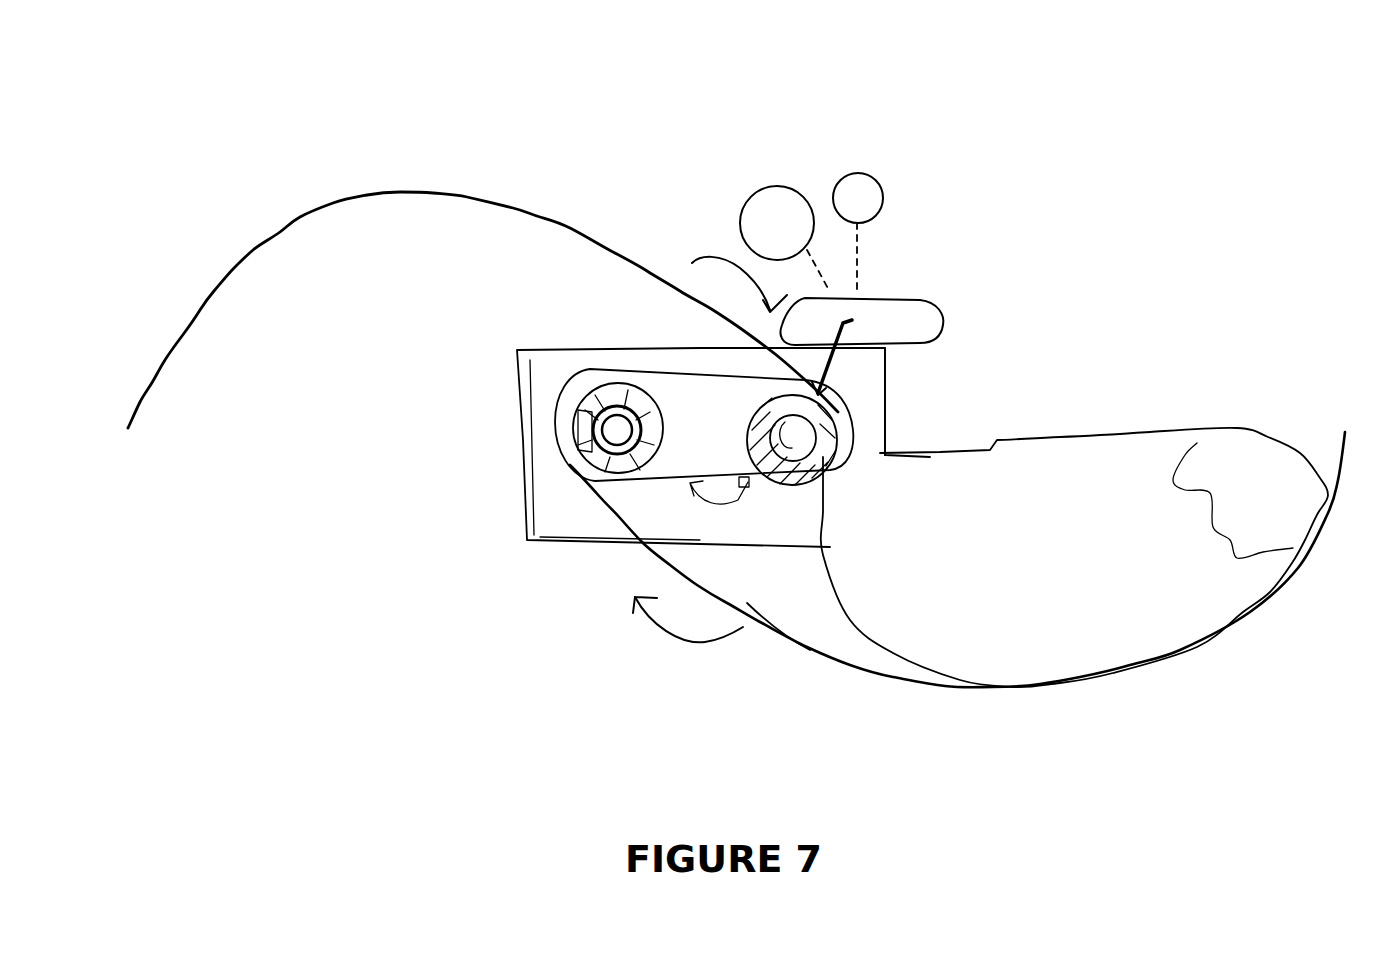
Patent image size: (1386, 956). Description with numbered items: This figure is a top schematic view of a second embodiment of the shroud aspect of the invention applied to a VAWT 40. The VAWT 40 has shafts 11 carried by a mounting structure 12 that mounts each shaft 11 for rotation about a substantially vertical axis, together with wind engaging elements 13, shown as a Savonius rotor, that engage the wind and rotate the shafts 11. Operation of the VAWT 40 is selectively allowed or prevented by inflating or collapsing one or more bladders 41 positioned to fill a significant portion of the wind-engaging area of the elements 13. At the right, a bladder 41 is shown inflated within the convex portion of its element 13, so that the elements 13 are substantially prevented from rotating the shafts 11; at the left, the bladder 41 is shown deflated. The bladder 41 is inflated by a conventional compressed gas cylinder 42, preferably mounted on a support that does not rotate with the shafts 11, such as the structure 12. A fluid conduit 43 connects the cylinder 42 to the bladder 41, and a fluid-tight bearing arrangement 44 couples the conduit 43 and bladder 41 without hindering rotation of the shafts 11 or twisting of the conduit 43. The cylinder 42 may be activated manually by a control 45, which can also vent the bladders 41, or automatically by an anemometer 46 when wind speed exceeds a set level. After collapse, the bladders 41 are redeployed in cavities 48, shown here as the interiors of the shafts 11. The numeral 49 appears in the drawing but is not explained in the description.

The shaft 11 is at (668, 432).
The structure 12 is at (551, 498).
The wind engaging elements 13 is at (412, 148).
The VAWT 40 is at (1025, 214).
The bladder 41 is at (617, 432).
The compressed gas cylinder 42 is at (877, 297).
The fluid conduit 43 is at (842, 357).
The fluid-tight bearing arrangement 44 is at (887, 397).
The control 45 is at (757, 186).
The anemometer 46 is at (874, 164).
The cavities 48 is at (762, 442).
The axle 49 is at (821, 472).